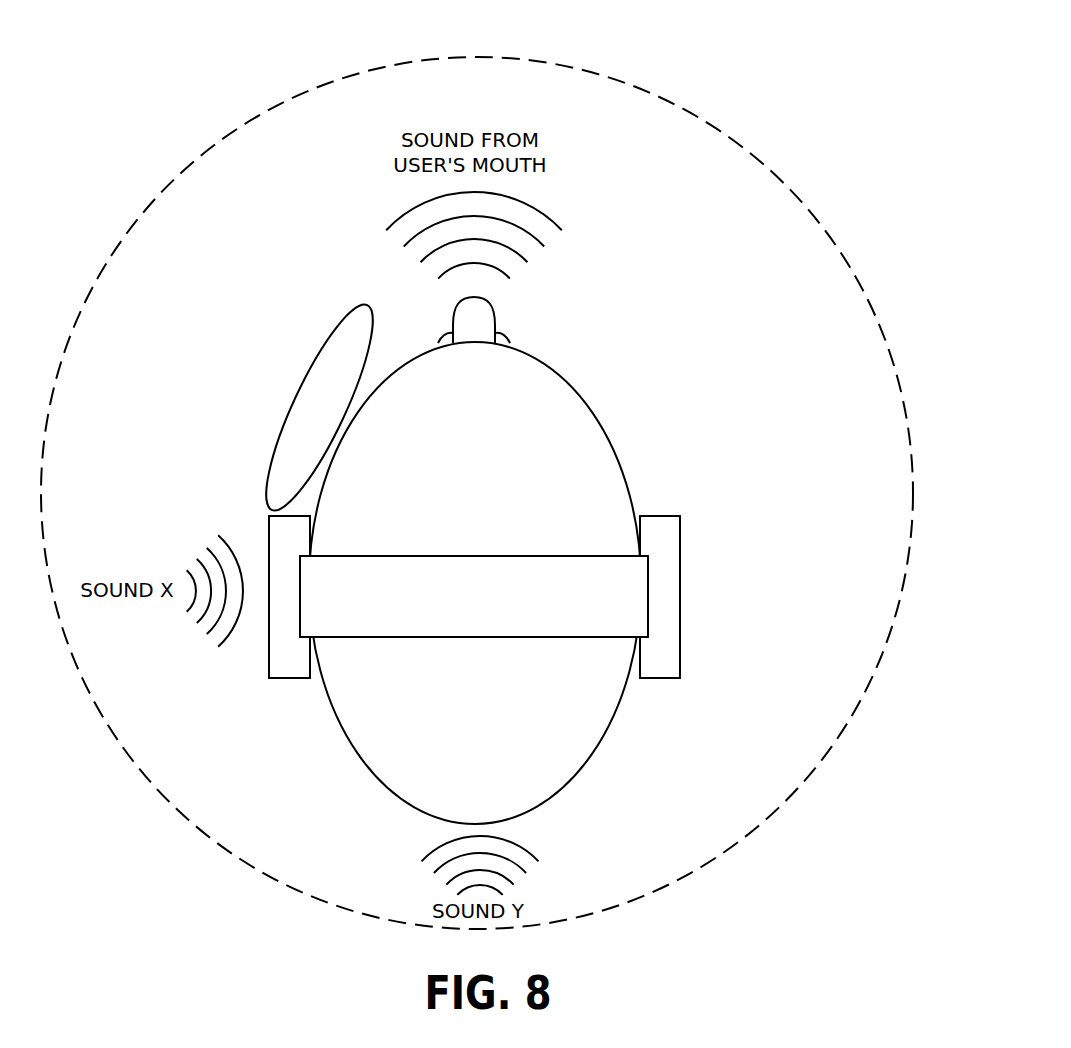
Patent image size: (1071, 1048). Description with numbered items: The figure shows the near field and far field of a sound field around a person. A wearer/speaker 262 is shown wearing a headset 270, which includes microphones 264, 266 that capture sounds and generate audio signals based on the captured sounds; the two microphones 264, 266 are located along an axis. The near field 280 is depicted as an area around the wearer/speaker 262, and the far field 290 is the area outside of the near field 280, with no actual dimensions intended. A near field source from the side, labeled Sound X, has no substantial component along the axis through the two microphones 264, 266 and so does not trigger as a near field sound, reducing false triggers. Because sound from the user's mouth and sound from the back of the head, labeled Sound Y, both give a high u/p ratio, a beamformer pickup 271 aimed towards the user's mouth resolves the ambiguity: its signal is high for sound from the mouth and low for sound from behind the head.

The far field 290 is at (767, 58).
The near field 280 is at (671, 226).
The wearer/speaker 262 is at (615, 437).
The microphone 264 is at (455, 545).
The microphone 266 is at (269, 528).
The headset 270 is at (497, 556).
The beamformer pickup 271 is at (332, 368).